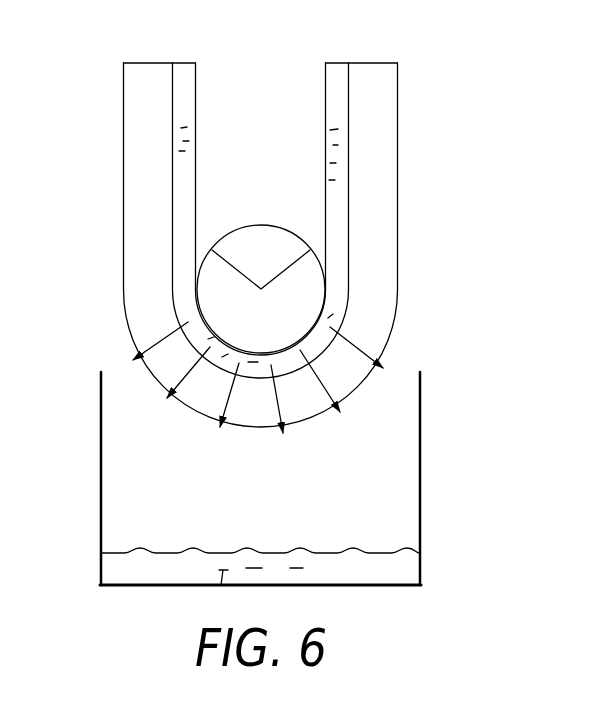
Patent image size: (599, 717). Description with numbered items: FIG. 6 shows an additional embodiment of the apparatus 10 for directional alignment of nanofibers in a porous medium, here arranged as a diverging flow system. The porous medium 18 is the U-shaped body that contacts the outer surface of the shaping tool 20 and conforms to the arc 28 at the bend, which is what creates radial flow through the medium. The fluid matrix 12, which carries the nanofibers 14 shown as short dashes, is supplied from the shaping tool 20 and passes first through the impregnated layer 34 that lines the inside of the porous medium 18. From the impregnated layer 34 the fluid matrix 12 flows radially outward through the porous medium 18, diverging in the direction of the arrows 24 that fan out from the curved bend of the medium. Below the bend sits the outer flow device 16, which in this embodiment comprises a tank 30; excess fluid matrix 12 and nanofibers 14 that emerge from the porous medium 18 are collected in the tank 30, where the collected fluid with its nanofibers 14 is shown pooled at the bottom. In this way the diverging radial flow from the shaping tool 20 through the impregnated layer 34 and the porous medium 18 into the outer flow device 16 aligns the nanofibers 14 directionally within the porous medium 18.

The apparatus 10 is at (492, 53).
The fluid matrix 12 is at (337, 68).
The nanofibers 14 is at (185, 128).
The outer flow device 16 is at (98, 567).
The porous medium 18 is at (142, 157).
The shaping tool 20 is at (259, 215).
The arrows 24 is at (143, 357).
The arc 28 is at (317, 253).
The tank 30 is at (162, 518).
The impregnated layer 34 is at (186, 88).